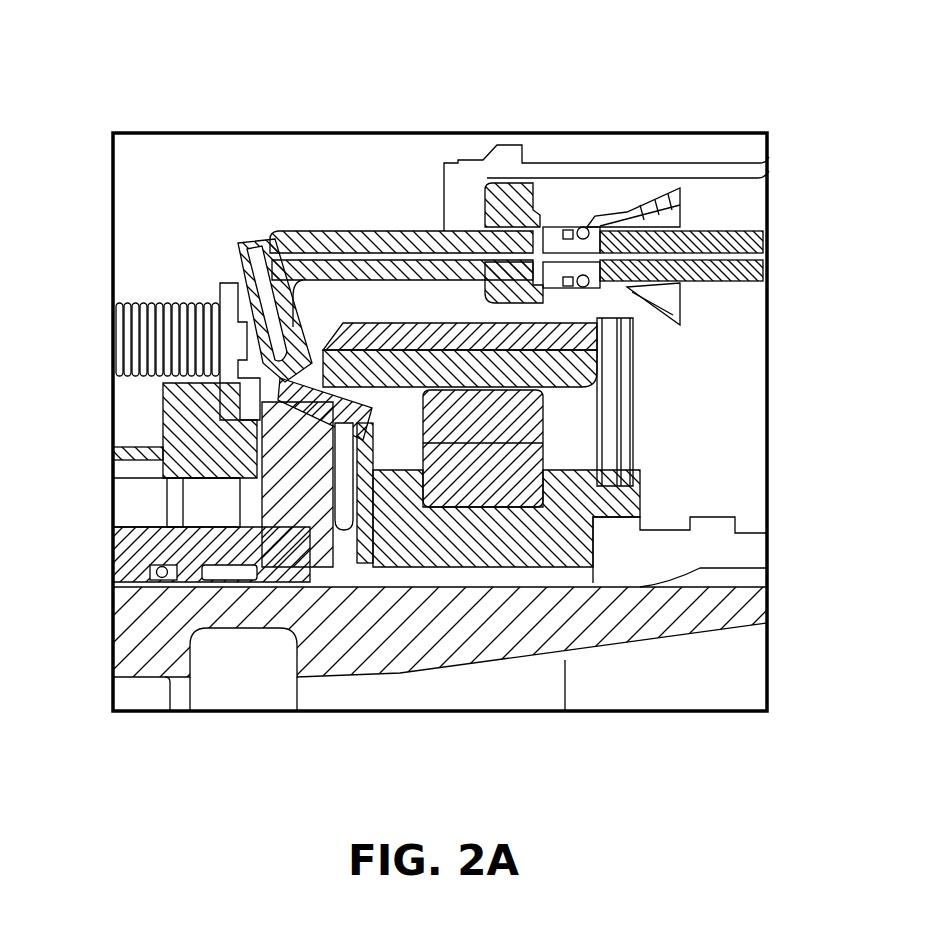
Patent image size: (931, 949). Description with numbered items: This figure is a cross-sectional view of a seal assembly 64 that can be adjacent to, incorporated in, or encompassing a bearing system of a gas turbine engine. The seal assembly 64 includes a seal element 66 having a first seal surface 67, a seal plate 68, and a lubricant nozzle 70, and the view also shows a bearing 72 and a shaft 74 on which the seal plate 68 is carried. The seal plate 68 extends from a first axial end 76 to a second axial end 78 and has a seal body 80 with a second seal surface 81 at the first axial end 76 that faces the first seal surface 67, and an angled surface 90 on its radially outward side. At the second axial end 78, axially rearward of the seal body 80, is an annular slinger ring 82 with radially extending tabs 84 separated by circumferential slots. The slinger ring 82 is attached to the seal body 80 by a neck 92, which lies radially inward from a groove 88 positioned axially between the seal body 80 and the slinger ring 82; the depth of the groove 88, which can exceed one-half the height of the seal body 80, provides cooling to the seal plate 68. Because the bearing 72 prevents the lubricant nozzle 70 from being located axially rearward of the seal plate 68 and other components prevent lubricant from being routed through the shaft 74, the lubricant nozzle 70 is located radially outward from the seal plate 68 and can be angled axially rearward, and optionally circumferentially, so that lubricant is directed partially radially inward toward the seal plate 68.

The seal assembly 64 is at (339, 74).
The seal element 66 is at (200, 423).
The first seal surface 67 is at (240, 442).
The seal plate 68 is at (300, 520).
The lubricant nozzle 70 is at (264, 265).
The bearing 72 is at (557, 560).
The shaft 74 is at (385, 680).
The first axial end 76 is at (265, 388).
The second axial end 78 is at (325, 545).
The seal body 80 is at (230, 555).
The second seal surface 81 is at (265, 480).
The slinger ring 82 is at (453, 523).
The tabs 84 is at (370, 455).
The groove 88 is at (363, 560).
The angled surface 90 is at (340, 360).
The neck 92 is at (343, 530).